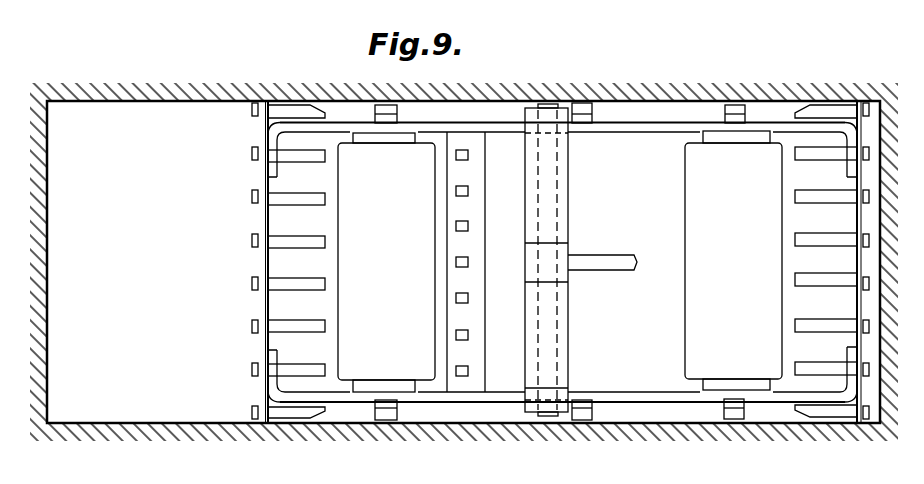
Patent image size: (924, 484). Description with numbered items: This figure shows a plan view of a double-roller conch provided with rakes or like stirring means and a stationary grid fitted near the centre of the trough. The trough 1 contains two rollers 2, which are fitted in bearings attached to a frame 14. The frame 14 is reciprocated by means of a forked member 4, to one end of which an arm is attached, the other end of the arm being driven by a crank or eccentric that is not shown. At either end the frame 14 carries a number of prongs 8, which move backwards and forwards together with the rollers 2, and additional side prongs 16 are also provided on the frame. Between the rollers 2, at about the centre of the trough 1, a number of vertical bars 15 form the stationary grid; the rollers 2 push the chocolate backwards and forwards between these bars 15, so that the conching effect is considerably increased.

The trough 1 is at (464, 262).
The rollers 2 is at (560, 261).
The forked member 4 is at (565, 212).
The prongs 8 is at (315, 155).
The frame 14 is at (622, 126).
The vertical bars 15 is at (468, 190).
The side prongs 16 is at (392, 110).